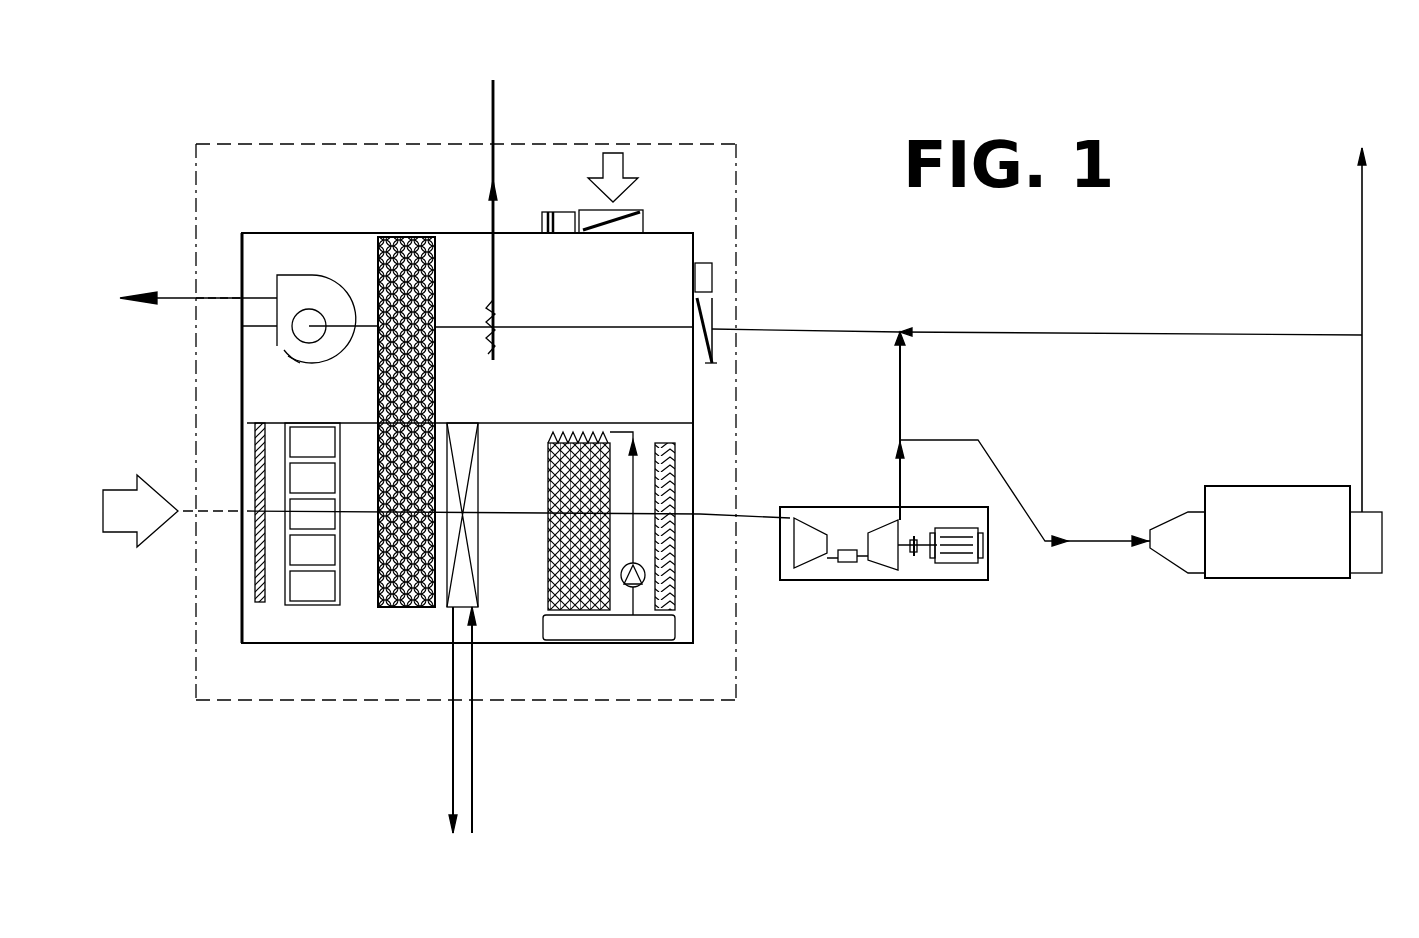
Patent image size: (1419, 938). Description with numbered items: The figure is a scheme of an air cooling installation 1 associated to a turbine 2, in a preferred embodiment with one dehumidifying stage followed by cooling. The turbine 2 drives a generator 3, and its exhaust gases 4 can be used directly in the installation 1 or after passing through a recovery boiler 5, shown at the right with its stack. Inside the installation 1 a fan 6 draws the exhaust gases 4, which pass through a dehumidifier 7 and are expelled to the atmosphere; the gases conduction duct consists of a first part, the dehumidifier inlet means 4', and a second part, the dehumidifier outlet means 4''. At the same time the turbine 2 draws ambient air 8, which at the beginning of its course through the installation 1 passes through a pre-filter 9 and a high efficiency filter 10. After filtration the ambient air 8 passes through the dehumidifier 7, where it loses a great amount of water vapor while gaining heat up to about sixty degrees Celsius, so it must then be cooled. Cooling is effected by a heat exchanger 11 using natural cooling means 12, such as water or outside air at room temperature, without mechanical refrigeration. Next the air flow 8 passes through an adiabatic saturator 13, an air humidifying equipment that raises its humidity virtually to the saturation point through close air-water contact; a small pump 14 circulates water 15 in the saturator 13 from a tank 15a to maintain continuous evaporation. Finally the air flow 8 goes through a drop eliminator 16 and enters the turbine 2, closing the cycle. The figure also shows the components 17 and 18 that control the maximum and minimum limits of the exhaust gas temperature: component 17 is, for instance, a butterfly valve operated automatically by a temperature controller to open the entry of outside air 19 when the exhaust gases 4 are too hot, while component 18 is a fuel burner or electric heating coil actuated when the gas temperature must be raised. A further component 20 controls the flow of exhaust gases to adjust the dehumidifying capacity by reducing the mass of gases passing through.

The air cooling installation 1 is at (753, 212).
The turbine 2 is at (882, 560).
The generator 3 is at (953, 566).
The exhaust gases 4 is at (741, 351).
The dehumidifier inlet means 4' is at (517, 220).
The dehumidifier outlet means 4'' is at (219, 273).
The recovery boiler 5 is at (1236, 573).
The fan 6 is at (320, 285).
The dehumidifier 7 is at (392, 608).
The ambient air 8 is at (160, 490).
The pre-filter 9 is at (262, 605).
The high efficiency filter 10 is at (303, 607).
The heat exchanger 11 is at (478, 585).
The natural cooling means 12 is at (458, 776).
The adiabatic saturator 13 is at (571, 612).
The pump 14 is at (630, 588).
The water 15 is at (636, 462).
The tank 15a is at (600, 641).
The drop eliminator 16 is at (668, 612).
The butterfly valve 17 is at (645, 226).
The fuel burner or electric heating coil 18 is at (490, 315).
The outside air 19 is at (612, 162).
The exhaust gas flow control component 20 is at (716, 340).